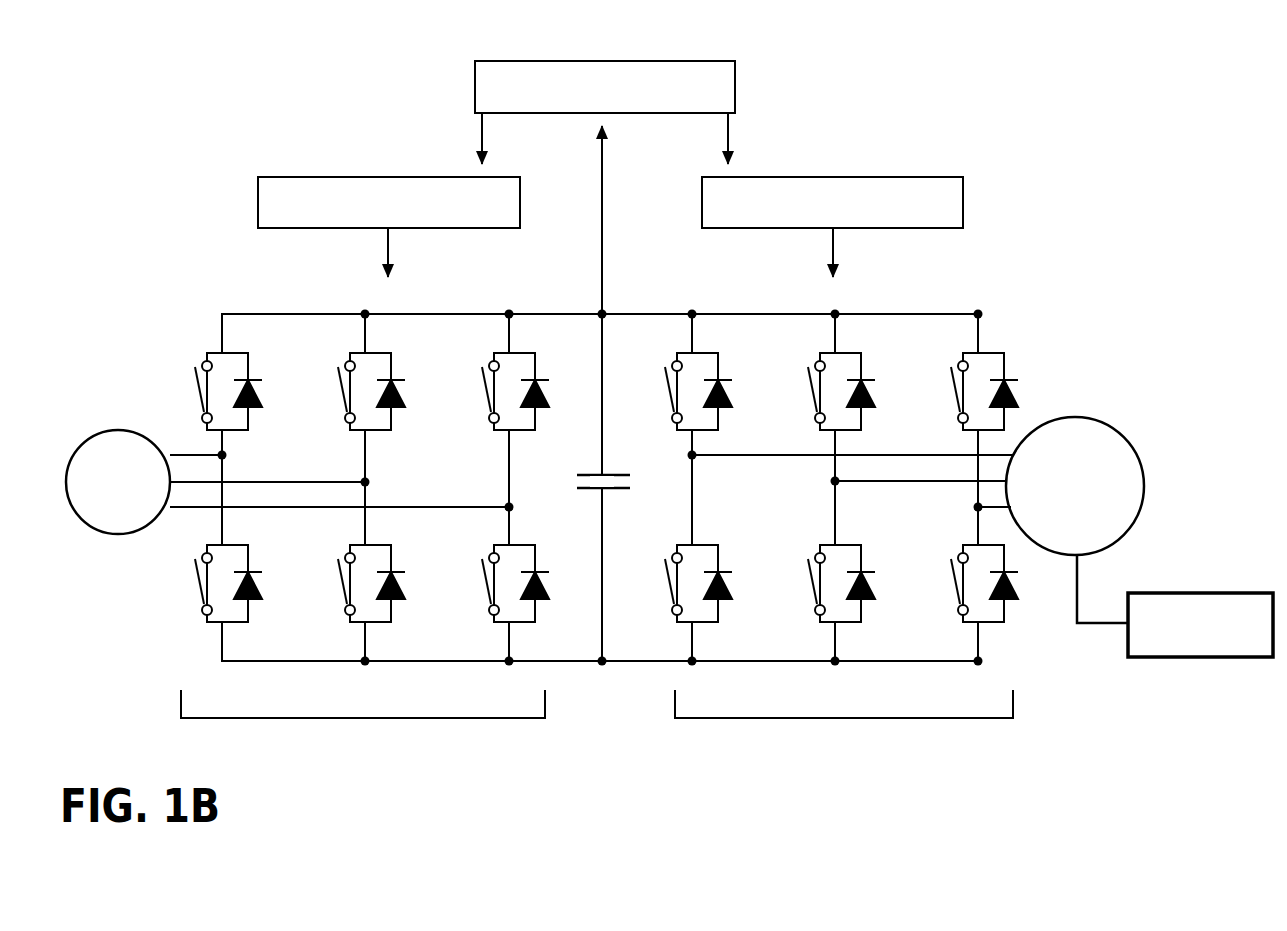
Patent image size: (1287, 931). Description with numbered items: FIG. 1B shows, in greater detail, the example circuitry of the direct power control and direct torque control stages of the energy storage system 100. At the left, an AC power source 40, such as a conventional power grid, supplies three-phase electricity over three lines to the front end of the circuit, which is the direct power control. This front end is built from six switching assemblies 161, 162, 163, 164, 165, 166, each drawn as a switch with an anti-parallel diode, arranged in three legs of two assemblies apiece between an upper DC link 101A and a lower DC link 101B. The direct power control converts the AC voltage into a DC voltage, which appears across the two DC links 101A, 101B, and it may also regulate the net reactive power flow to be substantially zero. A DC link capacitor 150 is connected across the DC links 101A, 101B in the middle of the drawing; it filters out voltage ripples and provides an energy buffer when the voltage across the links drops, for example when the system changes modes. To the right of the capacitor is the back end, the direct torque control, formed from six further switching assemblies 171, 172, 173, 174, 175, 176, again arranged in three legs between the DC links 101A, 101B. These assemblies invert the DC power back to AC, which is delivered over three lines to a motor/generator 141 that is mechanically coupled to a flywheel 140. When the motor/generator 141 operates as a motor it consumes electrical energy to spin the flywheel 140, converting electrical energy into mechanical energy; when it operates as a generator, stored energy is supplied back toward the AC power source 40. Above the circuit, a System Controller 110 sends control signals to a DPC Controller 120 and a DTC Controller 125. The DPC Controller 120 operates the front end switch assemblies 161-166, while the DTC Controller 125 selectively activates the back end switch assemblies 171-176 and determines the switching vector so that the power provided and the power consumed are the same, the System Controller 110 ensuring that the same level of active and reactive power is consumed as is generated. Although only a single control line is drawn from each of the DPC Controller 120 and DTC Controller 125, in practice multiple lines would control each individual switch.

The energy storage system 100 is at (262, 96).
The System Controller 110 is at (475, 97).
The DPC Controller 120 is at (258, 203).
The DTC Controller 125 is at (963, 210).
The DC link 101A is at (556, 312).
The DC link 101B is at (483, 664).
The DC link capacitor 150 is at (573, 490).
The AC power source 40 is at (147, 528).
The motor/generator 141 is at (1140, 518).
The flywheel 140 is at (1185, 657).
The switching assembly 161 is at (183, 367).
The switching assembly 162 is at (326, 367).
The switching assembly 163 is at (470, 367).
The switching assembly 164 is at (186, 580).
The switching assembly 165 is at (337, 578).
The switching assembly 166 is at (478, 578).
The switching assembly 171 is at (654, 368).
The switching assembly 172 is at (798, 368).
The switching assembly 173 is at (940, 368).
The switching assembly 174 is at (653, 560).
The switching assembly 175 is at (796, 560).
The switching assembly 176 is at (940, 560).